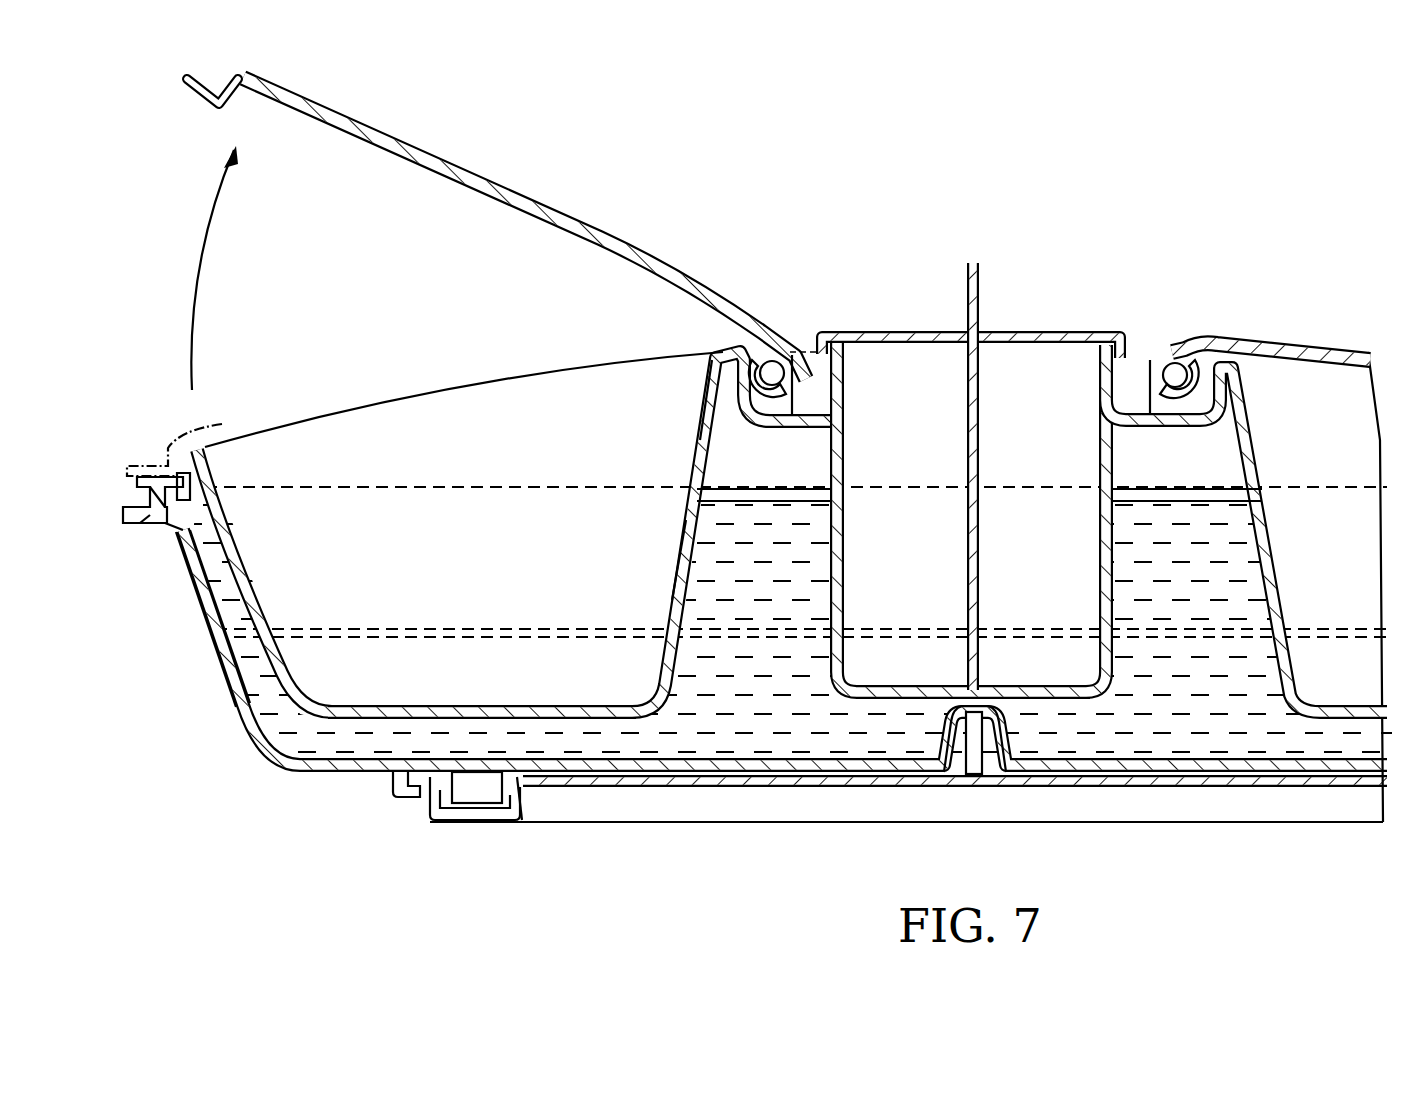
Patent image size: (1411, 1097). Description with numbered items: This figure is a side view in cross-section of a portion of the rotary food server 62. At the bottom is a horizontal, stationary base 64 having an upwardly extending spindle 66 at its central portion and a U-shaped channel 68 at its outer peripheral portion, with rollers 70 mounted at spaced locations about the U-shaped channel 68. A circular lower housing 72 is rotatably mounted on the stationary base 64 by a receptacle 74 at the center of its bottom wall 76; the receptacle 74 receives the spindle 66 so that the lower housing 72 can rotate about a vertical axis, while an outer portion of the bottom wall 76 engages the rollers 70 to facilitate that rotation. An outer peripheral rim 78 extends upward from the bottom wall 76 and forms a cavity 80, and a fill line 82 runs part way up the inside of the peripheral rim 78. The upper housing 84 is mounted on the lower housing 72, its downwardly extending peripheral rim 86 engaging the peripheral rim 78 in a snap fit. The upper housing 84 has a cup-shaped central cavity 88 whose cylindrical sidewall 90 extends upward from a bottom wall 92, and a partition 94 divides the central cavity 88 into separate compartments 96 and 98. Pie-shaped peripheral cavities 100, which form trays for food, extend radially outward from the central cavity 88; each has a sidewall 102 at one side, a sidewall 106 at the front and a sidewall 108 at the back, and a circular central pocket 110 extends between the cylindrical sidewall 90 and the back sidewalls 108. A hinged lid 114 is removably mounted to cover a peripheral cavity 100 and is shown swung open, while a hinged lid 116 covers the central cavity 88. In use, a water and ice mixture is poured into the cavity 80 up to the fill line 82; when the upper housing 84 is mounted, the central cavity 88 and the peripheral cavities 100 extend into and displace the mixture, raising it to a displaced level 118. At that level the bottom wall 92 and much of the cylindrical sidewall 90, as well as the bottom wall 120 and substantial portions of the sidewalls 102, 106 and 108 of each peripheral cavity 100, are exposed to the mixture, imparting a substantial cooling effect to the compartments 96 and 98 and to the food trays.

The rotary food server 62 is at (1057, 235).
The stationary base 64 is at (447, 819).
The spindle 66 is at (975, 760).
The U-shaped channel 68 is at (490, 803).
The rollers 70 is at (470, 797).
The lower housing 72 is at (242, 758).
The receptacle 74 is at (930, 745).
The bottom wall 76 is at (740, 762).
The outer peripheral rim 78 is at (205, 605).
The cavity 80 is at (705, 672).
The fill line 82 is at (490, 627).
The upper housing 84 is at (518, 517).
The peripheral rim 86 is at (133, 497).
The central cavity 88 is at (966, 477).
The cylindrical sidewall 90 is at (1112, 460).
The bottom wall 92 is at (1028, 688).
The partition 94 is at (985, 548).
The compartment 96 is at (1076, 355).
The compartment 98 is at (858, 358).
The peripheral cavities 100 is at (468, 405).
The sidewall 102 is at (571, 385).
The sidewall 106 is at (250, 552).
The sidewall 108 is at (674, 548).
The circular central pocket 110 is at (714, 462).
The hinged lid 114 is at (556, 213).
The hinged lid 116 is at (920, 330).
The displaced level 118 is at (745, 500).
The bottom wall 120 is at (440, 706).